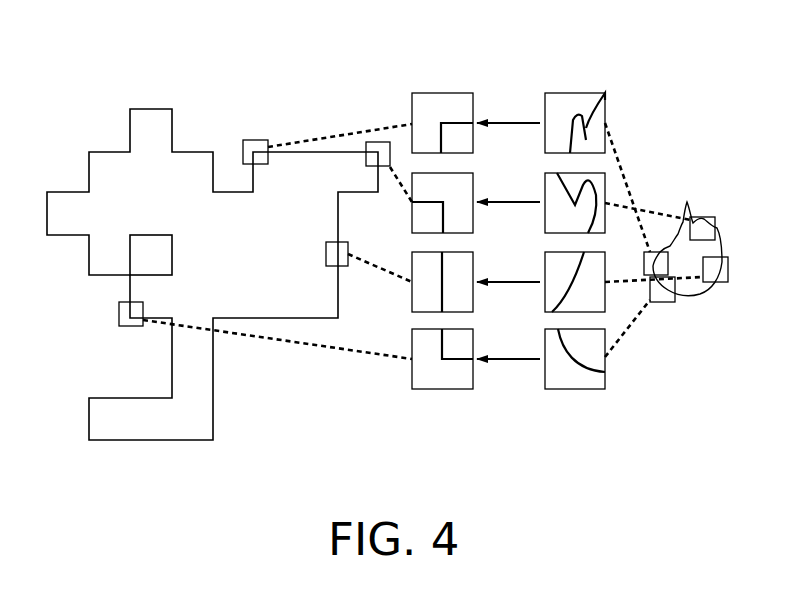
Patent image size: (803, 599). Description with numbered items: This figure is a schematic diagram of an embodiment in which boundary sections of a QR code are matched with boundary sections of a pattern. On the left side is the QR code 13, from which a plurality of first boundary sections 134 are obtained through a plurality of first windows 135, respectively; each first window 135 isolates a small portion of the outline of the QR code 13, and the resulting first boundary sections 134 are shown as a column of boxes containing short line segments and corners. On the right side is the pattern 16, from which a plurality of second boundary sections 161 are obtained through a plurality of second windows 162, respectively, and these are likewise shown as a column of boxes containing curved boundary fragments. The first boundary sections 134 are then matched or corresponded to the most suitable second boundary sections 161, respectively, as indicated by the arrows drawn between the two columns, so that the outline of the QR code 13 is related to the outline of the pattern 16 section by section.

The QR code 13 is at (102, 118).
The first boundary section 134 is at (447, 120).
The first window 135 is at (412, 107).
The pattern 16 is at (718, 228).
The second boundary section 161 is at (580, 117).
The second window 162 is at (605, 105).